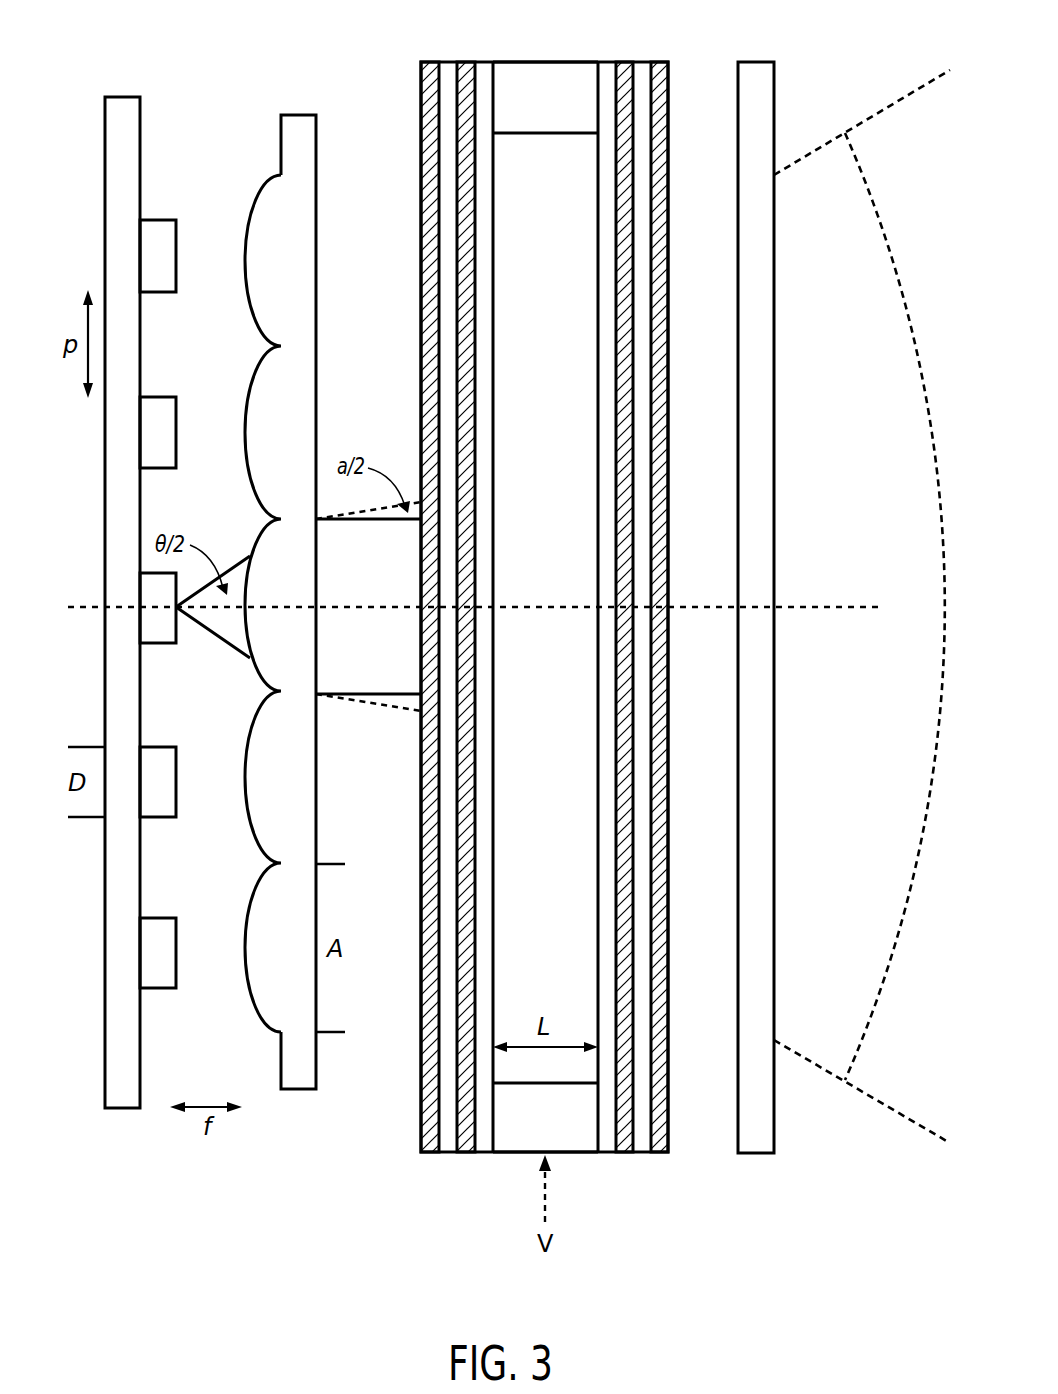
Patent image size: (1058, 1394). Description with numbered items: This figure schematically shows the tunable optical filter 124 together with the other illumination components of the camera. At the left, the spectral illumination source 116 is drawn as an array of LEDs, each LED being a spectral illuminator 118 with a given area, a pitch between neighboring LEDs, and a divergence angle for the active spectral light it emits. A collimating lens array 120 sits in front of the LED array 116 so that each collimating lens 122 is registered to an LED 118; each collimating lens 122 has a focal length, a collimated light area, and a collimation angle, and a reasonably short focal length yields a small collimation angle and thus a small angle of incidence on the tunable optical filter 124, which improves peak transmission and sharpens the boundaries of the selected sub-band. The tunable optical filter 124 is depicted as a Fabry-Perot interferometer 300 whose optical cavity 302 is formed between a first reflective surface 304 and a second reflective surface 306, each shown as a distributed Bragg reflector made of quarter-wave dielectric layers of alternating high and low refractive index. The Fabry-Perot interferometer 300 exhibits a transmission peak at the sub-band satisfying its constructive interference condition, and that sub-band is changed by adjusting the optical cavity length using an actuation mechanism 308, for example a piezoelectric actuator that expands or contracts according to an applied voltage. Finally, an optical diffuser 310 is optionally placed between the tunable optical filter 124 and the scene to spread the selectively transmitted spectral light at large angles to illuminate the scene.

The spectral illumination source 116 is at (125, 96).
The spectral illuminator 118 is at (154, 212).
The collimating lens array 120 is at (300, 113).
The collimating lens 122 is at (262, 170).
The tunable optical filter 124 is at (545, 61).
The Fabry-Perot interferometer 300 is at (545, 595).
The optical cavity 302 is at (552, 366).
The first reflective surface 304 is at (421, 246).
The second reflective surface 306 is at (668, 229).
The actuation mechanism 308 is at (570, 1154).
The optical diffuser 310 is at (755, 61).